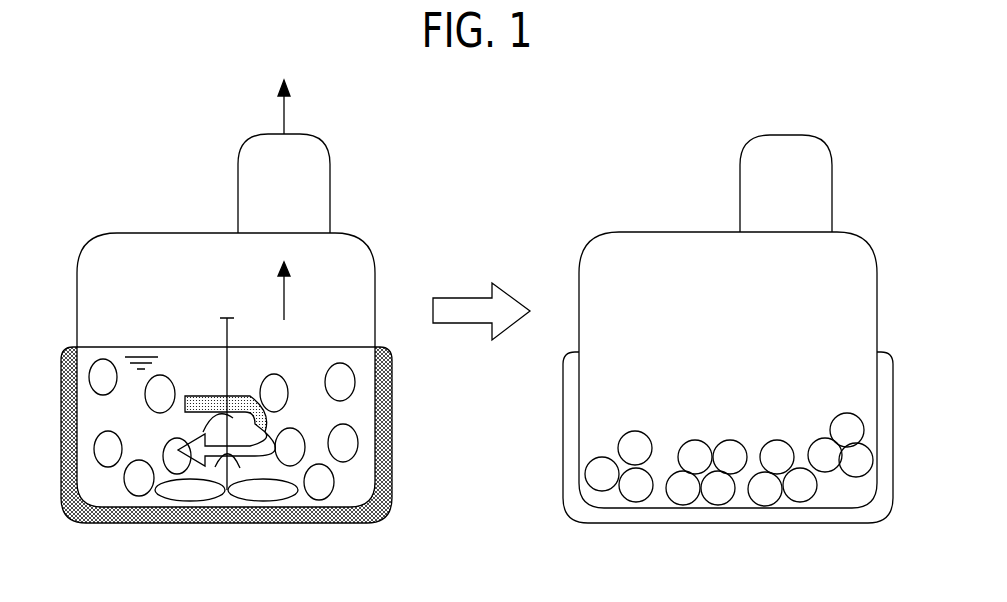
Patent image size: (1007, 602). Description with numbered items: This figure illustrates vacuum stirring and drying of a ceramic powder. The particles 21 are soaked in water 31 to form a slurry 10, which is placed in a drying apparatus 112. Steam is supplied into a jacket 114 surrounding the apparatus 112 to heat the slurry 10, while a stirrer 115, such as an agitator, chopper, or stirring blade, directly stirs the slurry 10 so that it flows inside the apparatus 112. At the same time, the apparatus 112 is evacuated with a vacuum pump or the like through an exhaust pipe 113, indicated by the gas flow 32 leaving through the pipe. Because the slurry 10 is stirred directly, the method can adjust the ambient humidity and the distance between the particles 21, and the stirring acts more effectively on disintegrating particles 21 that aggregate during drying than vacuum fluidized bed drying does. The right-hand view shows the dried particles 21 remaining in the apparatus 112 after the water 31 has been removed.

The slurry 10 is at (161, 328).
The particles 21 is at (340, 362).
The water 31 is at (305, 362).
The gas 32 is at (297, 298).
The drying apparatus 112 is at (81, 255).
The exhaust pipe 113 is at (237, 167).
The jacket 114 is at (232, 523).
The stirrer 115 is at (222, 330).